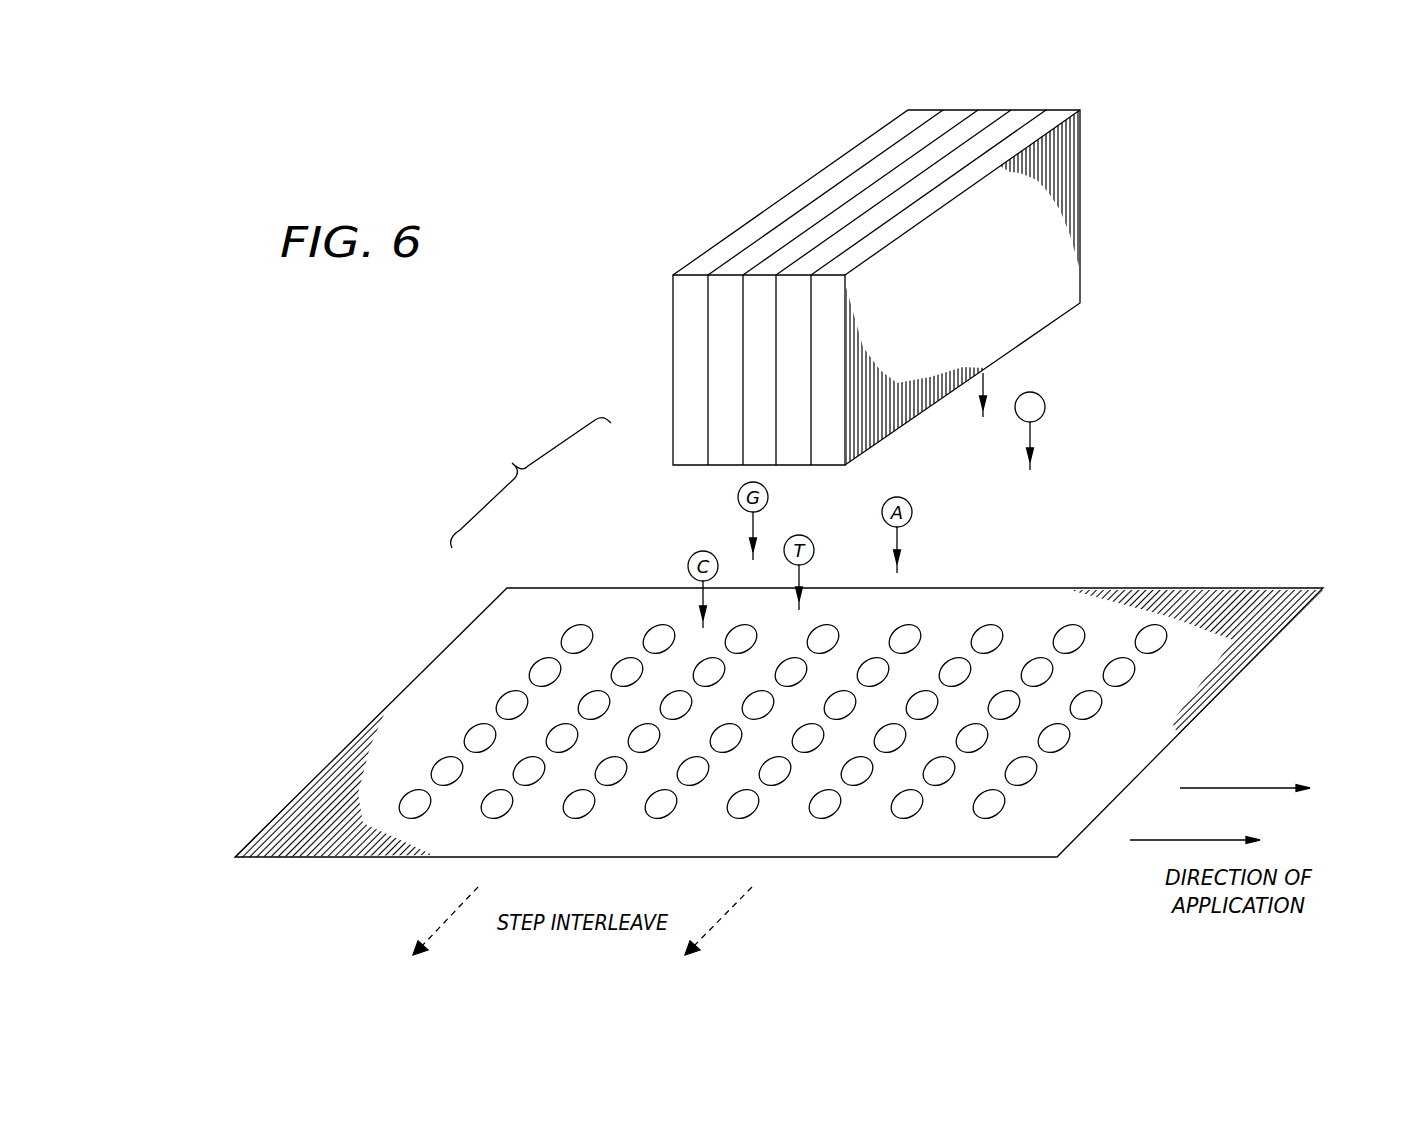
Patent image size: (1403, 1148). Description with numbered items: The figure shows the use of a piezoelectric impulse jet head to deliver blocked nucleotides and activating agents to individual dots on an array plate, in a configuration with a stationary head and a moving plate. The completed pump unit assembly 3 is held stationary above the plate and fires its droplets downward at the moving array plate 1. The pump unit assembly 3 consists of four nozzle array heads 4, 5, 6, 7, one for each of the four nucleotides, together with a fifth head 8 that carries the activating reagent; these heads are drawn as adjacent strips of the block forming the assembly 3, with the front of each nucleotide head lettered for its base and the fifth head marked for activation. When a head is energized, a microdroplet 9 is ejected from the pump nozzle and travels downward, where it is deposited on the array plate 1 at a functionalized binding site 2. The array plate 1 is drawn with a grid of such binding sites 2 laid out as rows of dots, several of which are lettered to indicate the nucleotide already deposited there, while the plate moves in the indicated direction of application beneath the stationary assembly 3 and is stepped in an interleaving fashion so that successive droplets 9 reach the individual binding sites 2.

The array plate 1 is at (1260, 612).
The functionalized binding site 2 is at (1151, 627).
The pump unit assembly 3 is at (870, 287).
The nozzle array head 4 is at (690, 300).
The nozzle array head 5 is at (738, 265).
The nozzle array head 6 is at (798, 245).
The nozzle array head 7 is at (855, 227).
The fifth head 8 is at (920, 207).
The microdroplet 9 is at (1045, 404).